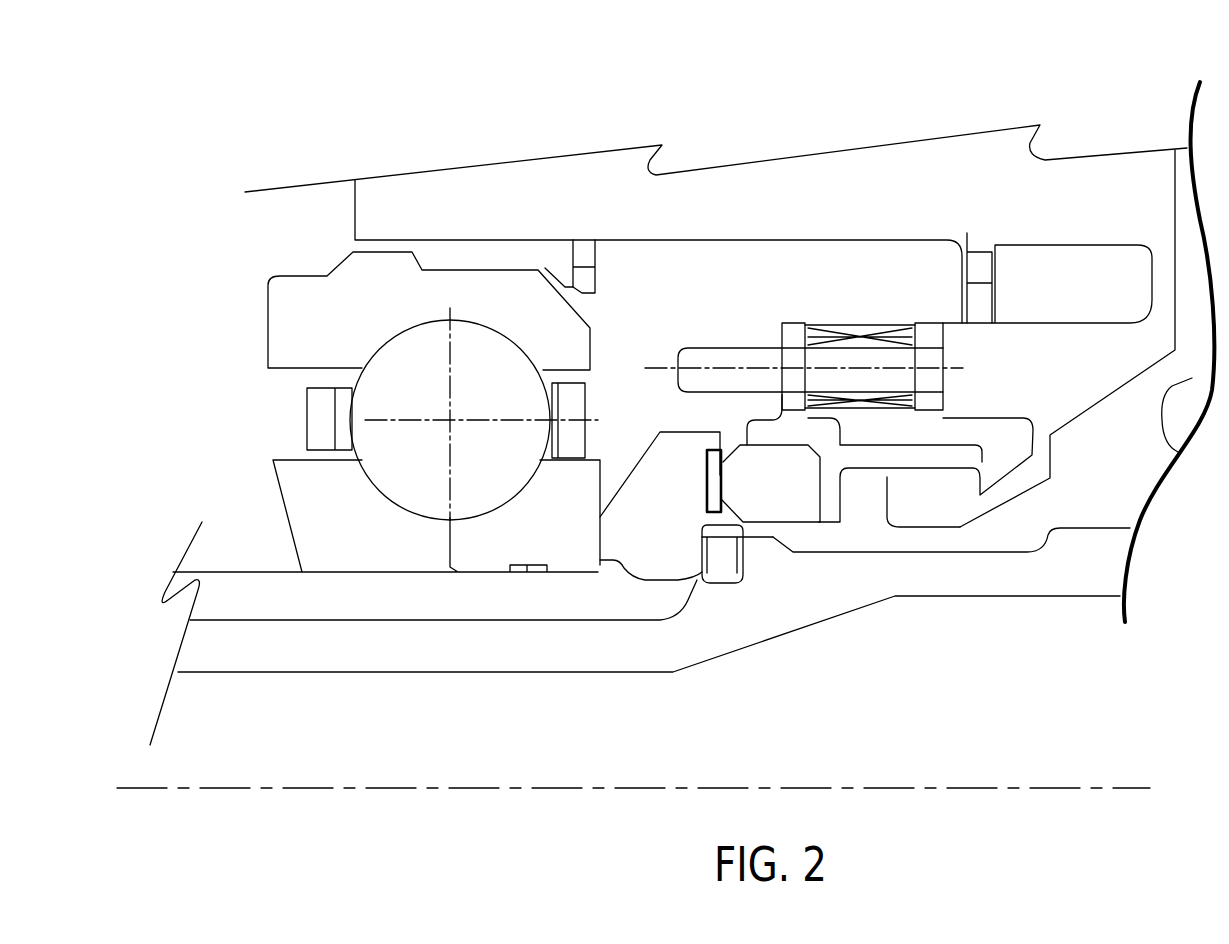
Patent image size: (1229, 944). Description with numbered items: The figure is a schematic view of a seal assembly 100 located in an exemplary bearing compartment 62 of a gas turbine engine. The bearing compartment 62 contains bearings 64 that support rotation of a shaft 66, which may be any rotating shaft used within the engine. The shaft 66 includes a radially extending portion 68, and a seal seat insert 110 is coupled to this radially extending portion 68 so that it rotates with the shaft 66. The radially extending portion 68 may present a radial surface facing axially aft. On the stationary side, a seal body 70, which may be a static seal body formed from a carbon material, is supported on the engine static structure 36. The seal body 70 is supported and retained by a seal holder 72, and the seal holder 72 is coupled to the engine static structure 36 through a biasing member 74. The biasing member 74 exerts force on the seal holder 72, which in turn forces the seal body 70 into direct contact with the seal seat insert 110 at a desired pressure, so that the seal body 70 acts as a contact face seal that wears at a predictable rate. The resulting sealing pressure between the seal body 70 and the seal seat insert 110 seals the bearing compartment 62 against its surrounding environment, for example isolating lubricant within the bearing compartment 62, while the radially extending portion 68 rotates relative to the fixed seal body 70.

The seal assembly 100 is at (291, 108).
The bearing compartment 62 is at (700, 268).
The bearings 64 is at (403, 364).
The shaft 66 is at (618, 658).
The radially extending portion 68 is at (663, 537).
The seal body 70 is at (782, 500).
The seal holder 72 is at (838, 458).
The biasing member 74 is at (852, 330).
The engine static structure 36 is at (1042, 365).
The seal seat insert 110 is at (713, 503).